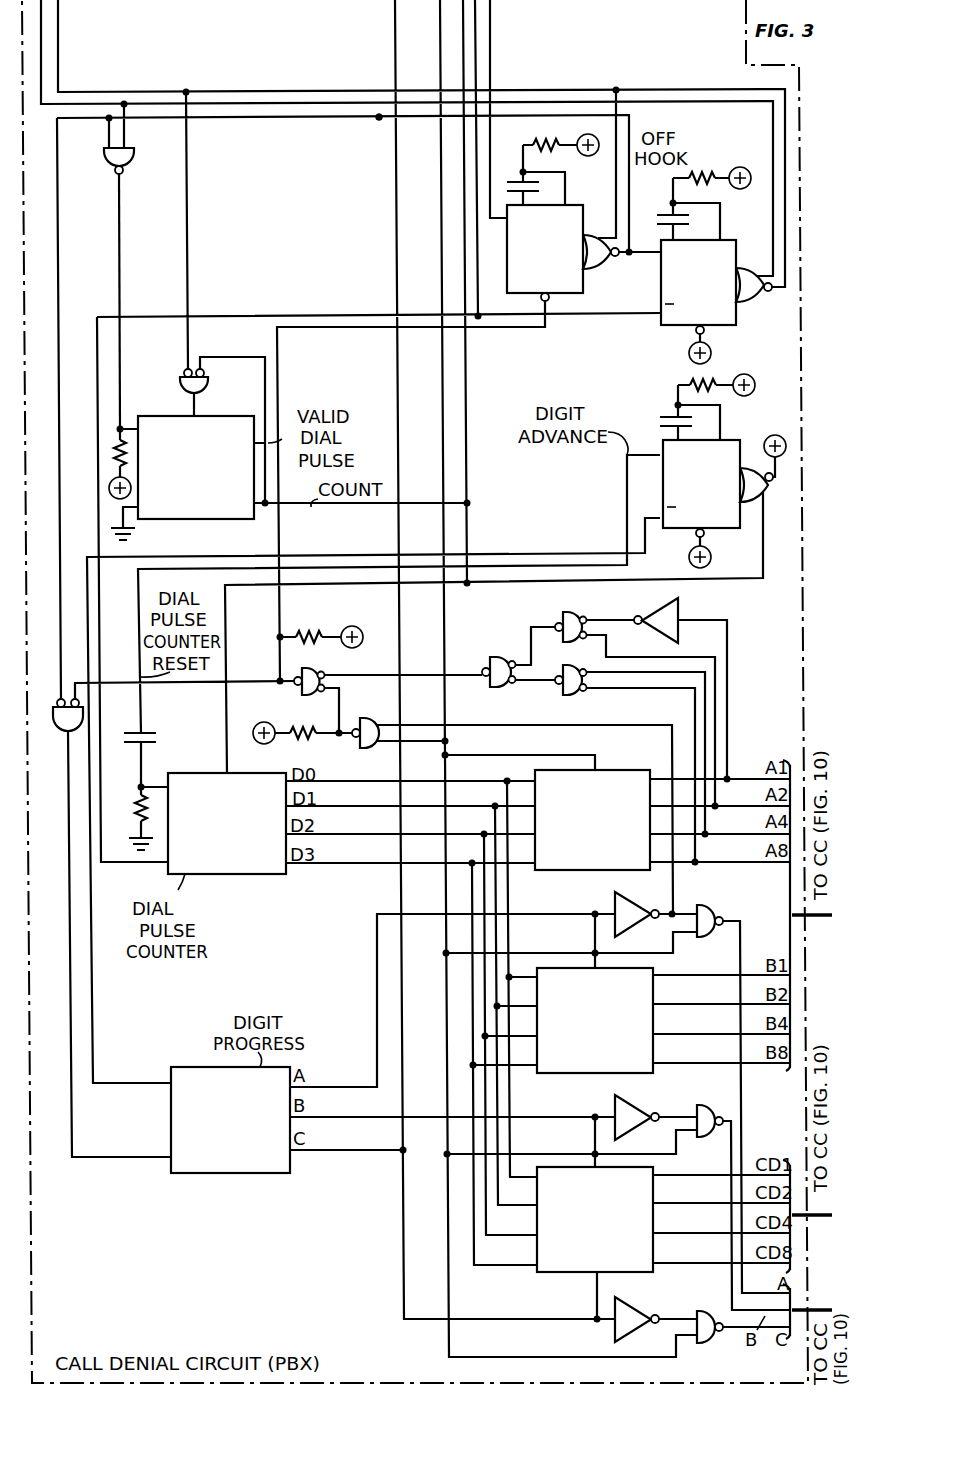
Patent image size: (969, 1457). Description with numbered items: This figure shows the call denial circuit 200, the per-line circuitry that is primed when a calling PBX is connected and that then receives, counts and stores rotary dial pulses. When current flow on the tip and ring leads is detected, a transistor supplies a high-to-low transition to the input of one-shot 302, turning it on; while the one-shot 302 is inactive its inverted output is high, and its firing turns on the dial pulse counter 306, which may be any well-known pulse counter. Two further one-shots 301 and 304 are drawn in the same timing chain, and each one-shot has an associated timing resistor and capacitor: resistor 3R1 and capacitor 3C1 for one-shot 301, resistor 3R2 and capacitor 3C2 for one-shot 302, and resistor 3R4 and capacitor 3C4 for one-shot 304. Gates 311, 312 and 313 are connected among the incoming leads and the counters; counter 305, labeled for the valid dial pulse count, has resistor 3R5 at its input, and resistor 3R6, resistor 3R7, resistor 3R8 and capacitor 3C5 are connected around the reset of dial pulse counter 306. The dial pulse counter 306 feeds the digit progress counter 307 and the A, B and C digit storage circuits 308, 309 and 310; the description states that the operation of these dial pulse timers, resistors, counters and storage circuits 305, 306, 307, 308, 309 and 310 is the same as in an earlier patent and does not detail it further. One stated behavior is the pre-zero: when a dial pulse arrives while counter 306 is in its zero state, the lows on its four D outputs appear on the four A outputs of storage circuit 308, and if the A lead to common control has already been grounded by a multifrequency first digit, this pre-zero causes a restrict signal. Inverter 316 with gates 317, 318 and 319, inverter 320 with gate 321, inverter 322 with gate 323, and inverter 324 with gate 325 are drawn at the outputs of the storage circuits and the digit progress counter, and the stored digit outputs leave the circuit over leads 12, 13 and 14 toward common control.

The call denial circuit 200 is at (490, 1376).
The 6 ms monostable flip-flop 301 is at (583, 288).
The one-shot 302 is at (736, 318).
The 200 ms monostable flip-flop 304 is at (722, 528).
The dial pulse counter element 305 is at (209, 519).
The dial pulse counter 306 is at (268, 874).
The digit progress counter 307 is at (252, 1173).
The A digit storage circuit 308 is at (566, 870).
The B digit storage circuit 309 is at (566, 1073).
The C digit storage circuit 310 is at (575, 1272).
The NAND gate 311 is at (107, 153).
The NAND gate 312 is at (179, 382).
The NOR gate 313 is at (62, 730).
The inverter 316 is at (680, 605).
The NAND gate 317 is at (573, 612).
The NAND gate 318 is at (568, 695).
The NAND gate 319 is at (492, 663).
The inverter 320 is at (622, 902).
The NAND gate 321 is at (699, 910).
The inverter 322 is at (626, 1111).
The NAND gate 323 is at (705, 1113).
The inverter 324 is at (636, 1293).
The NAND gate 325 is at (706, 1343).
The timing resistor 3R1 is at (538, 135).
The timing resistor 3R2 is at (692, 172).
The timing resistor 3R4 is at (706, 378).
The pull-up resistor 3R5 is at (115, 456).
The pull-up resistor 3R6 is at (314, 630).
The pull-up resistor 3R7 is at (300, 730).
The resistor 3R8 is at (132, 821).
The timing capacitor 3C1 is at (546, 189).
The timing capacitor 3C2 is at (702, 220).
The timing capacitor 3C4 is at (654, 422).
The capacitor 3C5 is at (152, 748).
The lead to common control 12 is at (816, 920).
The lead to common control 13 is at (816, 1220).
The lead to common control 14 is at (816, 1307).